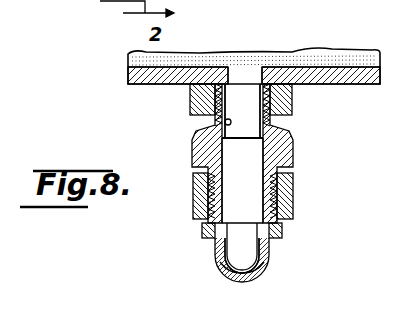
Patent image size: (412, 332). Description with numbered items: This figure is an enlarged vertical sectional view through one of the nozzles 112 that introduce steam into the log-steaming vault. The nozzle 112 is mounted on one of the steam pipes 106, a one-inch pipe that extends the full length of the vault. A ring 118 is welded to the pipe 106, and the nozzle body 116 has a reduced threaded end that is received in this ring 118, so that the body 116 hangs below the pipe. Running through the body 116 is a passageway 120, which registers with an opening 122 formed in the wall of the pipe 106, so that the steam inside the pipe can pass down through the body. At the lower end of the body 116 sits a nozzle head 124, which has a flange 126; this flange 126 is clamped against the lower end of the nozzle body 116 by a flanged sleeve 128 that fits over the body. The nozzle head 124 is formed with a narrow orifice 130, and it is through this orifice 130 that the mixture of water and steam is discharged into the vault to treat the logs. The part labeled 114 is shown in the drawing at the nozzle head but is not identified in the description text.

The panel 106 is at (130, 73).
The fastener assembly 112 is at (190, 183).
The cap 114 is at (265, 288).
The threaded body 116 is at (283, 152).
The nut 118 is at (292, 102).
The bead 120 is at (218, 121).
The pin 122 is at (245, 78).
The cup wall 124 is at (270, 258).
The cup flange 126 is at (283, 231).
The lock nut 128 is at (293, 199).
The cap bottom 130 is at (234, 281).